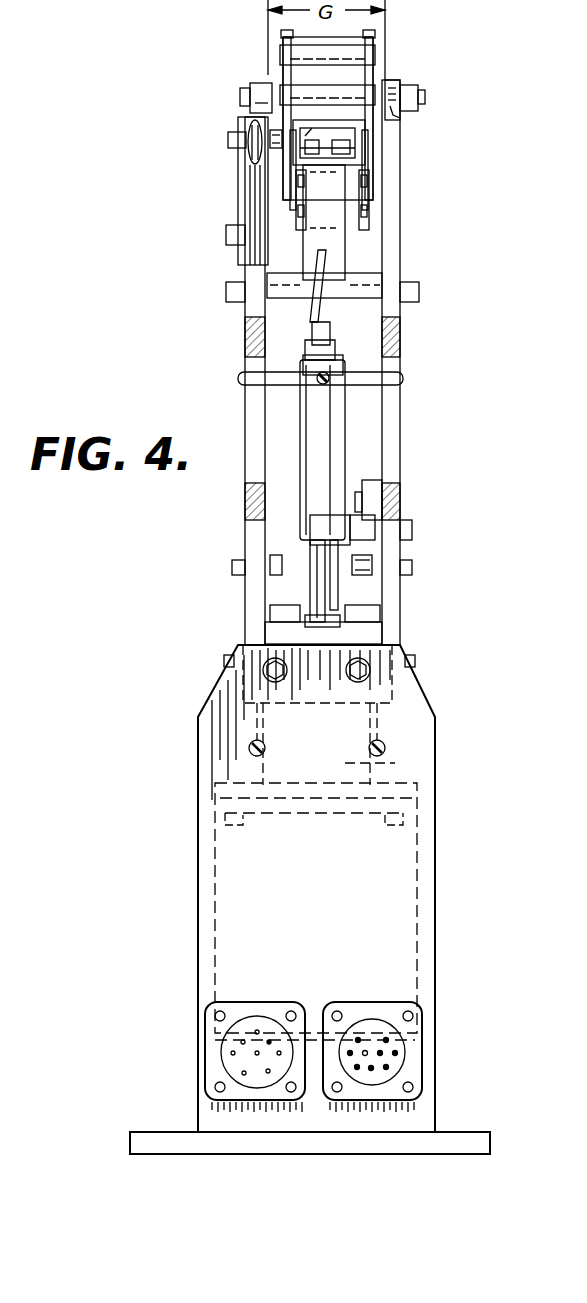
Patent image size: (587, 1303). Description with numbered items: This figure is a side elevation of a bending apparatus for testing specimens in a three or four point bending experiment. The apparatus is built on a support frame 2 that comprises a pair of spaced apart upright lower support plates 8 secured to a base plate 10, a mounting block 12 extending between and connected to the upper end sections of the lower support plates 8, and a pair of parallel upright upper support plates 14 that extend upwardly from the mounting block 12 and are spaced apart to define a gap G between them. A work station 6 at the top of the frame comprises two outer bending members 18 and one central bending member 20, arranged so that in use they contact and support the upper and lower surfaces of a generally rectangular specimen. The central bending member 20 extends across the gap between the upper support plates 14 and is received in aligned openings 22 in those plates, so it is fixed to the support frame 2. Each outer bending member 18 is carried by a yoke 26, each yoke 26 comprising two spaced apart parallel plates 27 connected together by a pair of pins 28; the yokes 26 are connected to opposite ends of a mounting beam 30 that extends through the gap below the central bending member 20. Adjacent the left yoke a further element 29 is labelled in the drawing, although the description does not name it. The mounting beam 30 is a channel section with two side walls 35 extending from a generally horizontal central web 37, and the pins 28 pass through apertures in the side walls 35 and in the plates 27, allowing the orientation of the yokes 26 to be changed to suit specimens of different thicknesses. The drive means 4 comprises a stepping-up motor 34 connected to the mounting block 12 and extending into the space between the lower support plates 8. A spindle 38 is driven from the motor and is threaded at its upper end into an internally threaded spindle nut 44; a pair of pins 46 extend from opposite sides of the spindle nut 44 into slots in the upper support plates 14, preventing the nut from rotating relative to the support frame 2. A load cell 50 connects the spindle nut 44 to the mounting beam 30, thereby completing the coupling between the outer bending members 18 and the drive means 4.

The support frame 2 is at (145, 538).
The drive means 4 is at (168, 882).
The work station 6 is at (190, 110).
The lower support plates 8 is at (228, 755).
The base plate 10 is at (152, 1132).
The mounting block 12 is at (400, 750).
The upper support plates 14 is at (258, 305).
The outer bending members 18 is at (330, 47).
The central bending member 20 is at (330, 87).
The aligned openings 22 is at (400, 122).
The yoke 26 is at (245, 55).
The plates 27 is at (245, 95).
The pins 28 is at (295, 150).
The cam roller 29 is at (250, 158).
The mounting beam 30 is at (300, 190).
The stepping-up motor 34 is at (400, 915).
The side walls 35 is at (350, 150).
The central web 37 is at (345, 190).
The spindle 38 is at (310, 615).
The spindle nut 44 is at (312, 405).
The pins 46 is at (403, 378).
The load cell 50 is at (330, 213).